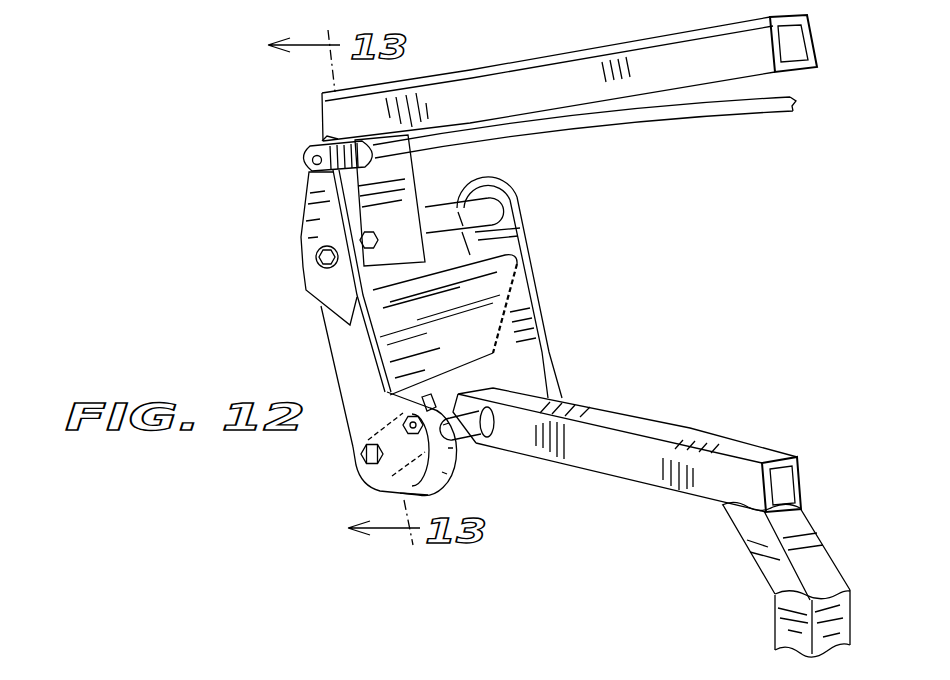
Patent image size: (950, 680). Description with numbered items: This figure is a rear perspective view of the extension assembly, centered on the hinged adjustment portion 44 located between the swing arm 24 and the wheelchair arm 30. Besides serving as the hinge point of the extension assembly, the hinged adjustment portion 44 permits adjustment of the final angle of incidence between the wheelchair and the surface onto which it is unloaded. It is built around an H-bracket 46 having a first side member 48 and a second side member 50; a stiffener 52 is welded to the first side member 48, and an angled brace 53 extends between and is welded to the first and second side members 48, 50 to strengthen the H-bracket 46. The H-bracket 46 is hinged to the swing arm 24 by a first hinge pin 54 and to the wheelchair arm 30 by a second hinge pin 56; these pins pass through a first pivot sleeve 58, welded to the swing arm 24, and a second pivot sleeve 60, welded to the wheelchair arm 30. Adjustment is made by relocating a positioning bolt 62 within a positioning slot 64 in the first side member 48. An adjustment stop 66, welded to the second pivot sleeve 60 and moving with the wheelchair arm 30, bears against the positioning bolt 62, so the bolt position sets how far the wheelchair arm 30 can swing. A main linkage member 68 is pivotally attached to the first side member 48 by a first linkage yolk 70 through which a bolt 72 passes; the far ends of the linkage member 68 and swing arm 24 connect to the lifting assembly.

The swing arm 24 is at (558, 72).
The wheelchair arm 30 is at (640, 425).
The hinged adjustment portion 44 is at (623, 265).
The H-bracket 46 is at (523, 228).
The first side member 48 is at (337, 365).
The second side member 50 is at (532, 342).
The stiffener 52 is at (318, 196).
The angled brace 53 is at (490, 280).
The first hinge pin 54 is at (316, 258).
The second hinge pin 56 is at (358, 463).
The first pivot sleeve 58 is at (470, 200).
The second pivot sleeve 60 is at (480, 443).
The positioning bolt 62 is at (402, 426).
The positioning slot 64 is at (400, 486).
The adjustment stop 66 is at (423, 395).
The main linkage member 68 is at (733, 115).
The first linkage yolk 70 is at (323, 136).
The bolt 72 is at (304, 158).